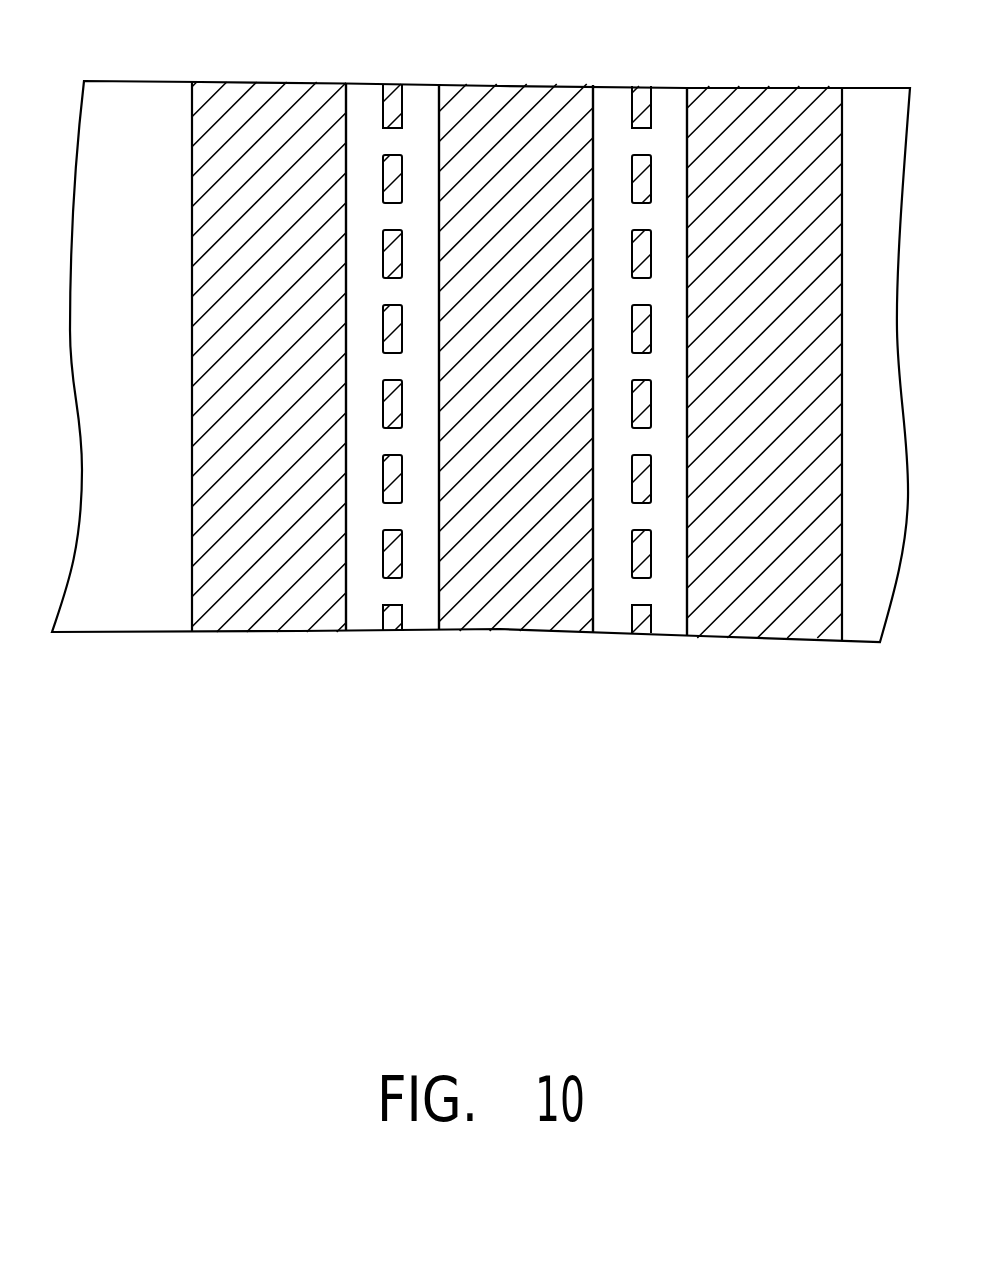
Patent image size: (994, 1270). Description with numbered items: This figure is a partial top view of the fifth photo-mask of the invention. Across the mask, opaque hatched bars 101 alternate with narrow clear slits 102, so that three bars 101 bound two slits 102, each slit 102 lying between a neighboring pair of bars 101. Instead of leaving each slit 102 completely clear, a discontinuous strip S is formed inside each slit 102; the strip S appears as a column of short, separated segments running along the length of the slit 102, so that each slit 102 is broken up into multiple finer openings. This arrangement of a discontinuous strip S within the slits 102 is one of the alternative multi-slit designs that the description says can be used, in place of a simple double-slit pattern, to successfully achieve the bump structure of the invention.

The line pattern (hatched region) 101 is at (270, 612).
The slit 102 is at (438, 78).
The discontinuous strip S is at (388, 623).